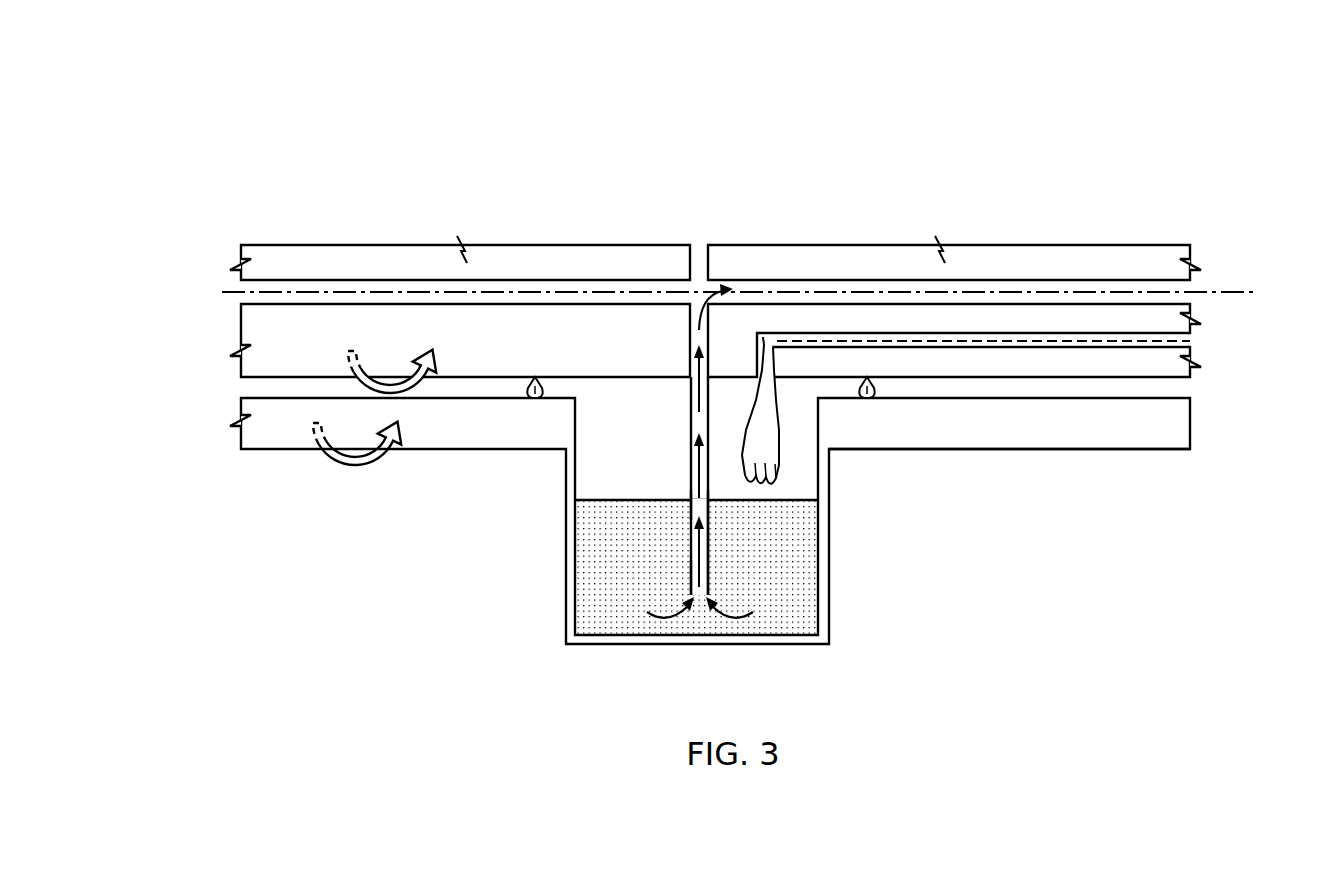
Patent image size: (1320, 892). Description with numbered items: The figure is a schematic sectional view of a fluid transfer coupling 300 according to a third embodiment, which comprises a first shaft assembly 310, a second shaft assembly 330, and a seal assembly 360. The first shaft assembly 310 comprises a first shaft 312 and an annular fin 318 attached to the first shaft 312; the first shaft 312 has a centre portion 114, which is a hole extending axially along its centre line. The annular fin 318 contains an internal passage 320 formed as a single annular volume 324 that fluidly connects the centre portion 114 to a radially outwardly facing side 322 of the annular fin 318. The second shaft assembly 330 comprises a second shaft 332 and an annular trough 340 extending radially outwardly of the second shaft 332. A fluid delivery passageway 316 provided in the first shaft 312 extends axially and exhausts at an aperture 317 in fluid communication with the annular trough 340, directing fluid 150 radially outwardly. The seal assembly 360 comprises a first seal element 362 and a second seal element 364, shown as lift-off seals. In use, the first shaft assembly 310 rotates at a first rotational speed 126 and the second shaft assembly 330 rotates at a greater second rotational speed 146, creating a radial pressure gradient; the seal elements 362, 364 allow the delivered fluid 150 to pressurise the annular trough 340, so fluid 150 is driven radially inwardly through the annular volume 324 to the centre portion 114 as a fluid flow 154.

The fluid transfer coupling 300 is at (1199, 152).
The centre portion 114 is at (1197, 292).
The first shaft assembly 310 is at (214, 331).
The fluid delivery passageway 316 is at (996, 333).
The first shaft 312 is at (1185, 363).
The aperture 317 is at (770, 380).
The first rotational speed 126 is at (437, 358).
The second rotational speed 146 is at (355, 466).
The second shaft assembly 330 is at (722, 523).
The annular trough 340 is at (566, 612).
The second shaft 332 is at (1162, 440).
The fluid 150 is at (802, 533).
The fluid flow 154 is at (691, 457).
The annular fin 318 is at (720, 535).
The internal passage 320 is at (703, 573).
The annular volume 324 is at (697, 507).
The radially outwardly facing side 322 is at (697, 598).
The seal assembly 360 is at (865, 383).
The first seal element 362 is at (535, 398).
The second seal element 364 is at (867, 398).